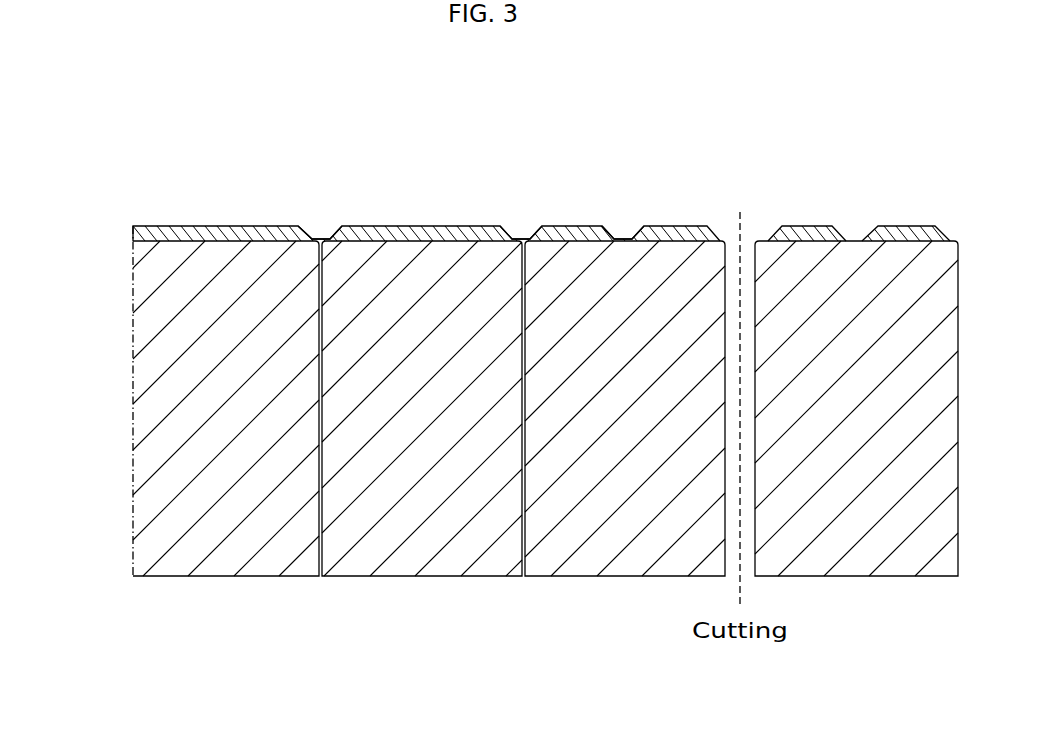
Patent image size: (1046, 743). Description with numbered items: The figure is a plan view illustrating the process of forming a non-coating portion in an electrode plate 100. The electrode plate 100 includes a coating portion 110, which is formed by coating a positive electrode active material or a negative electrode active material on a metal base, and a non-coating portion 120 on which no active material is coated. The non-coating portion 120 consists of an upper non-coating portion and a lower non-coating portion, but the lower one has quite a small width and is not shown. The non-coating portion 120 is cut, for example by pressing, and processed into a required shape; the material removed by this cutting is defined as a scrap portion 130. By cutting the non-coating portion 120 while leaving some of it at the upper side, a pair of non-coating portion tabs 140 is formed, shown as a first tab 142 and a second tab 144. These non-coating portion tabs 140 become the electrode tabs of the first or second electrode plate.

The electrode plate 100 is at (777, 212).
The coating portion 110 is at (148, 372).
The non-coating portion 120 is at (135, 229).
The scrap portion 130 is at (623, 230).
The non-coating portion tabs 140 is at (920, 152).
The first tab 142 is at (820, 226).
The second tab 144 is at (900, 226).